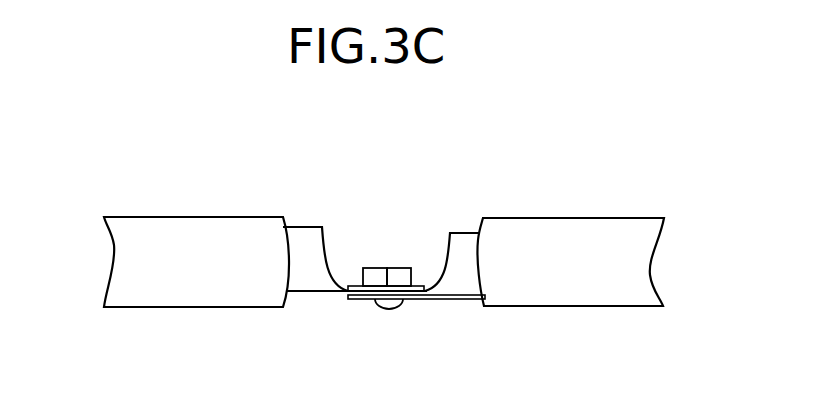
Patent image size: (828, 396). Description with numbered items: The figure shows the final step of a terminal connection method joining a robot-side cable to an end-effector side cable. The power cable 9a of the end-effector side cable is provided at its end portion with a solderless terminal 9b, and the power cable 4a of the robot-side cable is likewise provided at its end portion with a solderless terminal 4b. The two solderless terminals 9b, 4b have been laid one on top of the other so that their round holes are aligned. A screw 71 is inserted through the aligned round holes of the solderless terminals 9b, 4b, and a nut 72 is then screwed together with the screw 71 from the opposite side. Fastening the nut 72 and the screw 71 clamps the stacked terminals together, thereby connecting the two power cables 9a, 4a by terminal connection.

The power cable 9a is at (195, 217).
The solderless terminal 9b is at (307, 227).
The power cable 4a is at (583, 218).
The solderless terminal 4b is at (465, 232).
The nut 72 is at (381, 267).
The screw 71 is at (385, 310).